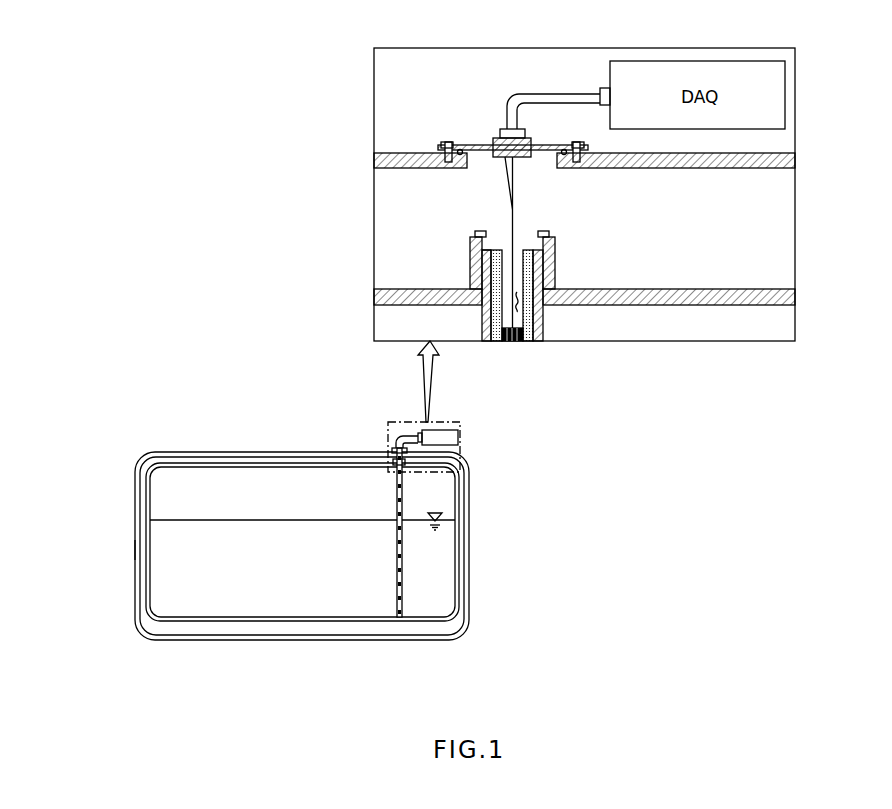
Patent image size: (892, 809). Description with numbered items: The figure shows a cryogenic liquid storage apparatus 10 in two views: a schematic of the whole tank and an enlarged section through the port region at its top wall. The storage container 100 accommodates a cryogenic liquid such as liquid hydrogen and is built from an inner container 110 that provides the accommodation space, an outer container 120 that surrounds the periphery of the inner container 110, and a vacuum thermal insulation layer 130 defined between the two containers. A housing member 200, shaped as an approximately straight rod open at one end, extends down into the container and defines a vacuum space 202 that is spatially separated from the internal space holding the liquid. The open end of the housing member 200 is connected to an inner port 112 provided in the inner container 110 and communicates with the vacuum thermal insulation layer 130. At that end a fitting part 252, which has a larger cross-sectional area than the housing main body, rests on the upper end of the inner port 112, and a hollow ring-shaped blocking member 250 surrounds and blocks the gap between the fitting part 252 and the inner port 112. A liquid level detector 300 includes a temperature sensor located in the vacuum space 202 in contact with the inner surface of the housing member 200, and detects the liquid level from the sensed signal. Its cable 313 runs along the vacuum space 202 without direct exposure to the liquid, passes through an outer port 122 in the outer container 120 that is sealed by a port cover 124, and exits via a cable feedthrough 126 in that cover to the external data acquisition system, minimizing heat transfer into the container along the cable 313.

The cryogenic liquid storage apparatus 10 is at (58, 70).
The storage container 100 is at (137, 457).
The inner container 110 is at (382, 294).
The inner port 112 is at (487, 272).
The outer container 120 is at (385, 160).
The outer port 122 is at (468, 144).
The port cover 124 is at (482, 144).
The cable feedthrough 126 is at (495, 138).
The vacuum thermal insulation layer 130 is at (395, 214).
The housing member 200 is at (540, 329).
The vacuum space 202 is at (520, 298).
The blocking member 250 is at (548, 270).
The fitting part 252 is at (535, 241).
The liquid level detector 300 is at (517, 345).
The cable 313 is at (513, 210).